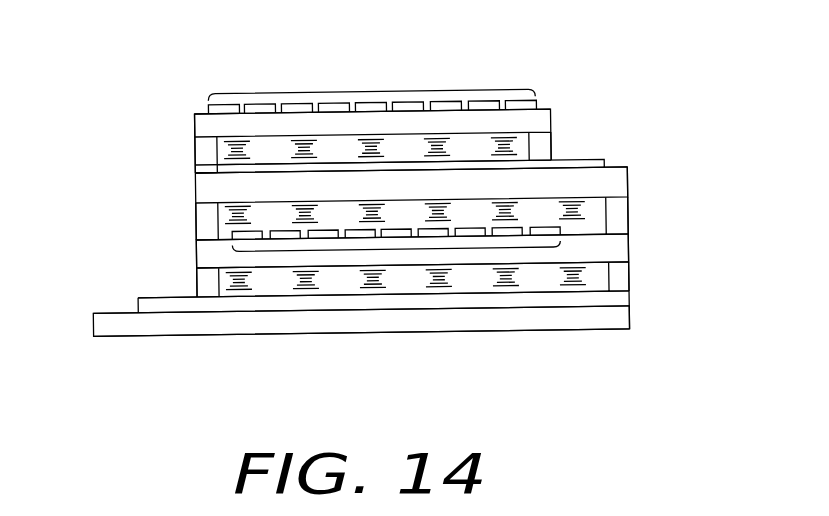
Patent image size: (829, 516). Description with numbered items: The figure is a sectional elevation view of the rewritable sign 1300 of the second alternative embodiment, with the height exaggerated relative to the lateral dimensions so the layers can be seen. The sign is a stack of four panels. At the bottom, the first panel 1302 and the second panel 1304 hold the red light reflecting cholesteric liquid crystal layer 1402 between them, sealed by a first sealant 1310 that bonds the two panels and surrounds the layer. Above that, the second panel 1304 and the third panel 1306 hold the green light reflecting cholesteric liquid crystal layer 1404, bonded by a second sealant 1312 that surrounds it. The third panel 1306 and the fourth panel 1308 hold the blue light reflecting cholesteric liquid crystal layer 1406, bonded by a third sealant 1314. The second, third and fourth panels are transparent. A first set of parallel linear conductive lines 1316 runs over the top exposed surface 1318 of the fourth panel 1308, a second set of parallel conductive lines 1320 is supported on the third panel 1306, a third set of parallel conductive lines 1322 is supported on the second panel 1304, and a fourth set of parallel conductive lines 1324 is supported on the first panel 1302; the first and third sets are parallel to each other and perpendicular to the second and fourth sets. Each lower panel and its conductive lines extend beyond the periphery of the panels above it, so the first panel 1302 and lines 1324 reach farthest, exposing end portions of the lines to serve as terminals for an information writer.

The rewritable sign 1300 is at (305, 80).
The first panel 1302 is at (120, 323).
The second panel 1304 is at (206, 248).
The third panel 1306 is at (618, 188).
The fourth panel 1308 is at (550, 105).
The first sealant 1310 is at (205, 280).
The second sealant 1312 is at (205, 212).
The third sealant 1314 is at (198, 152).
The first set of parallel linear conductive lines 1316 is at (375, 93).
The top exposed surface 1318 is at (197, 105).
The second set of parallel conductive lines 1320 is at (607, 163).
The third set of parallel conductive lines 1322 is at (392, 252).
The fourth set of parallel conductive lines 1324 is at (150, 301).
The red light reflecting cholesteric liquid crystal layer 1402 is at (592, 272).
The green light reflecting cholesteric liquid crystal layer 1404 is at (598, 212).
The blue light reflecting cholesteric liquid crystal layer 1406 is at (522, 147).